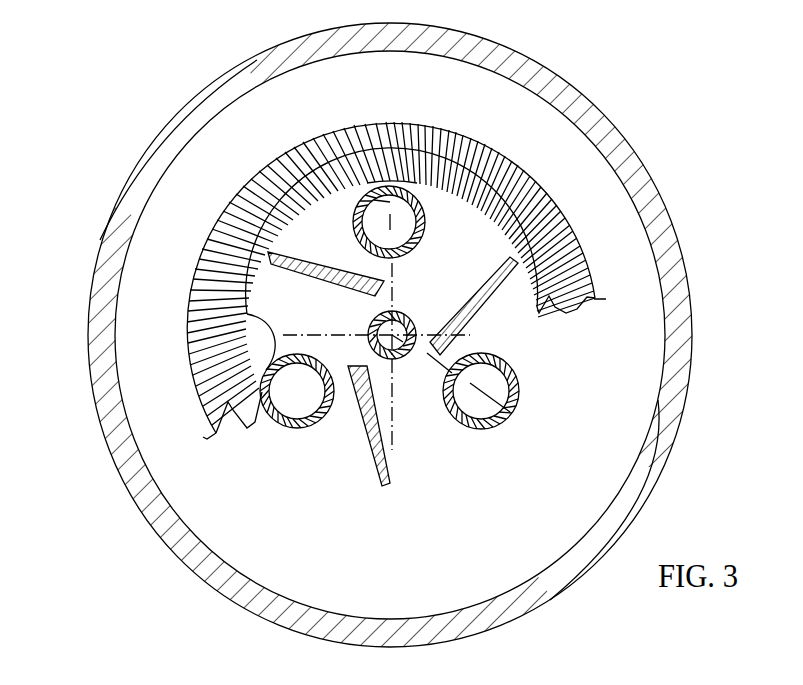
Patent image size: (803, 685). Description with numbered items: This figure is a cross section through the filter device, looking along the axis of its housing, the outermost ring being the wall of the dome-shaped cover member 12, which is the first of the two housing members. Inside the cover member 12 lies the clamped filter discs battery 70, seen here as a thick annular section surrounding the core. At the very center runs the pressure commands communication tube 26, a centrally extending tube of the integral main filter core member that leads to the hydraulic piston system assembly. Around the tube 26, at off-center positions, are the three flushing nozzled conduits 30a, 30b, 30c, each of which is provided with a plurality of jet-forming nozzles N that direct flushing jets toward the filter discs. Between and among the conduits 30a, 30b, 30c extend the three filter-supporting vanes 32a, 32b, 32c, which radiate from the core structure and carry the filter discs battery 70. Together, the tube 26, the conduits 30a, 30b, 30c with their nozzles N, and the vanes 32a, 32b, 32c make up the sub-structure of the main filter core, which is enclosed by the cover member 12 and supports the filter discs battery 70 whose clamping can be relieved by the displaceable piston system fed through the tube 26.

The dome-shaped cover member 12 is at (122, 458).
The jet-forming nozzles N is at (356, 183).
The filter discs battery 70 is at (253, 182).
The pressure commands communication tube 26 is at (391, 311).
The flushing nozzled conduit 30a is at (427, 226).
The flushing nozzled conduit 30b is at (455, 422).
The flushing nozzled conduit 30c is at (246, 315).
The filter-supporting vane 32a is at (489, 308).
The filter-supporting vane 32b is at (356, 418).
The filter-supporting vane 32c is at (337, 266).